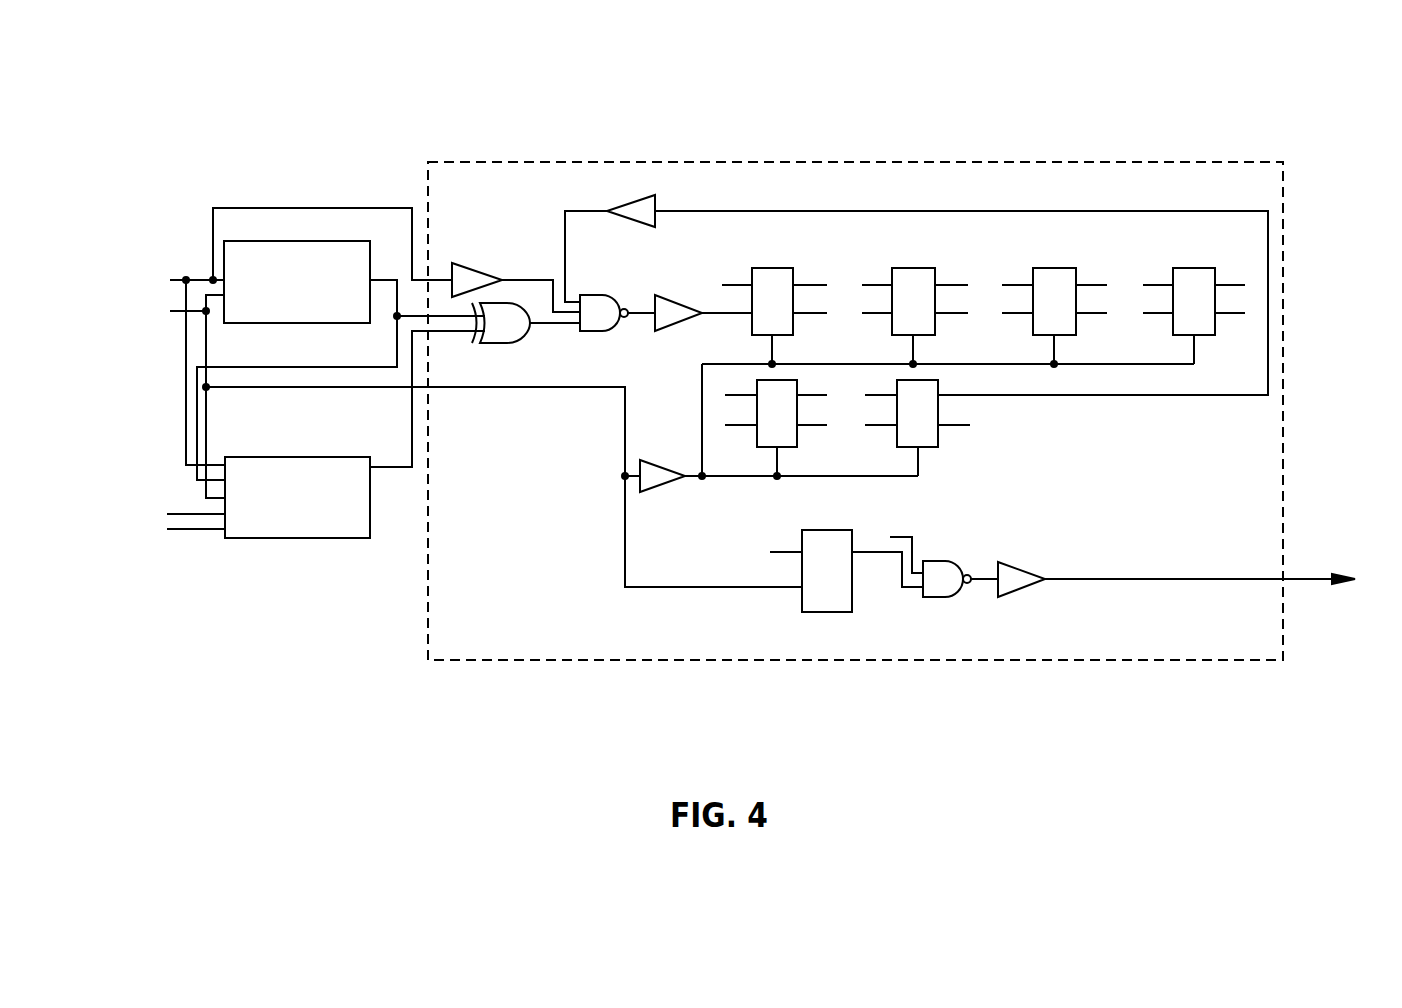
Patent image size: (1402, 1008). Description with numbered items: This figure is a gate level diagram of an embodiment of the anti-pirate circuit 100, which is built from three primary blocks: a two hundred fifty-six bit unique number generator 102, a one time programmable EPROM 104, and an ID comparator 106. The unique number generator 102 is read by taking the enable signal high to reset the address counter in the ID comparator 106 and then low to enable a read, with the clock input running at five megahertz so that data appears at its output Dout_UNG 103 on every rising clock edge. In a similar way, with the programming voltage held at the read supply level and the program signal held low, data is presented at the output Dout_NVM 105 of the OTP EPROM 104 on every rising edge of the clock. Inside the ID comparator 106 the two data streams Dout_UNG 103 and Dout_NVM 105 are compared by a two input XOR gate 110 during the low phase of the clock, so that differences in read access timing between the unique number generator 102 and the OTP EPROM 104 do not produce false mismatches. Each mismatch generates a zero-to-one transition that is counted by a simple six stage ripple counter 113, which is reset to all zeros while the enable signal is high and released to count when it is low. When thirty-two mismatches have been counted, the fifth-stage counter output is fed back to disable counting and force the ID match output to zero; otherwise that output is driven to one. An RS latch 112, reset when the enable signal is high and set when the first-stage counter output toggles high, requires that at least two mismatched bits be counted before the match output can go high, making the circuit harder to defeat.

The anti-pirate circuit 100 is at (690, 123).
The unique number generator 102 is at (355, 323).
The output (Dout_UNG) of the unique number generator 103 is at (382, 279).
The one time programmable (OTP) electrically programmable read only memory (EPROM) 104 is at (352, 538).
The output (Dout_NVM) of the OTP EPROM 105 is at (391, 467).
The ID comparator 106 is at (1165, 178).
The two input XOR gate 110 is at (500, 343).
The RS latch 112 is at (832, 612).
The six stage ripple counter 113 is at (780, 268).